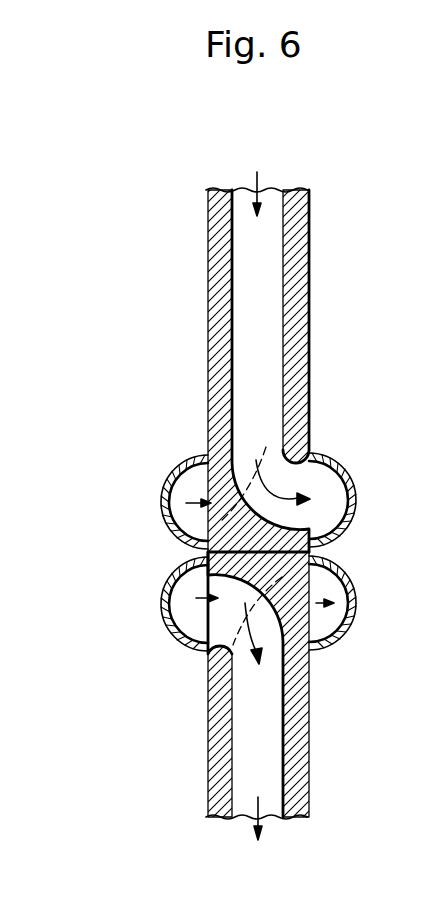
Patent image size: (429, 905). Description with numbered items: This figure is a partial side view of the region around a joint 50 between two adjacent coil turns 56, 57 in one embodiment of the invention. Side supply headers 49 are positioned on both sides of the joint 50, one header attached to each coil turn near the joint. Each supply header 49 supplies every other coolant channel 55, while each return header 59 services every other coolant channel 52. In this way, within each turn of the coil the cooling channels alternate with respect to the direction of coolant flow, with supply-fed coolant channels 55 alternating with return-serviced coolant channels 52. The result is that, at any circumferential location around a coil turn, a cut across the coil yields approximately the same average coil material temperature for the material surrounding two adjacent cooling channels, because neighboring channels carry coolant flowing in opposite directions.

The side supply header 49 is at (184, 458).
The joint 50 is at (208, 552).
The coolant channel 52 is at (340, 476).
The coolant channel 55 is at (198, 485).
The coil turn 56 is at (312, 267).
The coil turn 57 is at (312, 755).
The return header 59 is at (322, 456).